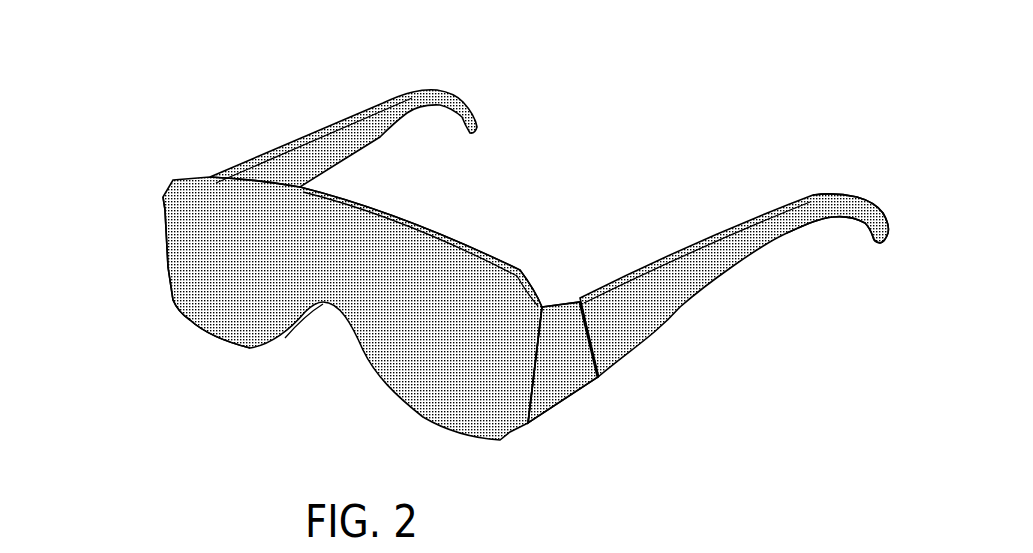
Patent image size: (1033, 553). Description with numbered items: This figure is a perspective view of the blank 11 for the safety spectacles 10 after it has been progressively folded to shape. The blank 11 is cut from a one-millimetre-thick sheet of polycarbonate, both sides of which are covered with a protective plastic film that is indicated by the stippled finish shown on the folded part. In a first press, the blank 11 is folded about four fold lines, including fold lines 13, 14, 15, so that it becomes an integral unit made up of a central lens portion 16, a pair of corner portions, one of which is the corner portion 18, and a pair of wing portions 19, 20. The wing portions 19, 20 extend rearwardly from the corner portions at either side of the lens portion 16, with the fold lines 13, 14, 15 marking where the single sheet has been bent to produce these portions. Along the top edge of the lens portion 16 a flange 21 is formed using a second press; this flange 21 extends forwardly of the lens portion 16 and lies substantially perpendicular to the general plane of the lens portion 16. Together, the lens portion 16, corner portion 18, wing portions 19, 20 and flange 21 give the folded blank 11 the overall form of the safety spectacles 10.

The safety spectacles 10 is at (465, 259).
The blank 11 is at (632, 225).
The fold line 13 is at (168, 268).
The fold line 14 is at (537, 390).
The fold line 15 is at (597, 352).
The lens portion 16 is at (417, 368).
The corner portion 18 is at (562, 377).
The wing portion 19 is at (380, 105).
The wing portion 20 is at (780, 238).
The flange 21 is at (477, 248).